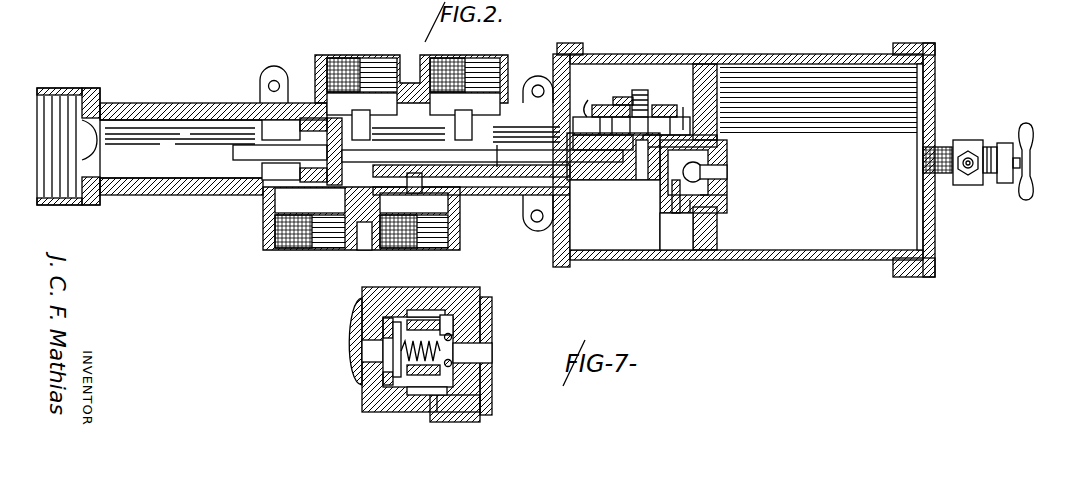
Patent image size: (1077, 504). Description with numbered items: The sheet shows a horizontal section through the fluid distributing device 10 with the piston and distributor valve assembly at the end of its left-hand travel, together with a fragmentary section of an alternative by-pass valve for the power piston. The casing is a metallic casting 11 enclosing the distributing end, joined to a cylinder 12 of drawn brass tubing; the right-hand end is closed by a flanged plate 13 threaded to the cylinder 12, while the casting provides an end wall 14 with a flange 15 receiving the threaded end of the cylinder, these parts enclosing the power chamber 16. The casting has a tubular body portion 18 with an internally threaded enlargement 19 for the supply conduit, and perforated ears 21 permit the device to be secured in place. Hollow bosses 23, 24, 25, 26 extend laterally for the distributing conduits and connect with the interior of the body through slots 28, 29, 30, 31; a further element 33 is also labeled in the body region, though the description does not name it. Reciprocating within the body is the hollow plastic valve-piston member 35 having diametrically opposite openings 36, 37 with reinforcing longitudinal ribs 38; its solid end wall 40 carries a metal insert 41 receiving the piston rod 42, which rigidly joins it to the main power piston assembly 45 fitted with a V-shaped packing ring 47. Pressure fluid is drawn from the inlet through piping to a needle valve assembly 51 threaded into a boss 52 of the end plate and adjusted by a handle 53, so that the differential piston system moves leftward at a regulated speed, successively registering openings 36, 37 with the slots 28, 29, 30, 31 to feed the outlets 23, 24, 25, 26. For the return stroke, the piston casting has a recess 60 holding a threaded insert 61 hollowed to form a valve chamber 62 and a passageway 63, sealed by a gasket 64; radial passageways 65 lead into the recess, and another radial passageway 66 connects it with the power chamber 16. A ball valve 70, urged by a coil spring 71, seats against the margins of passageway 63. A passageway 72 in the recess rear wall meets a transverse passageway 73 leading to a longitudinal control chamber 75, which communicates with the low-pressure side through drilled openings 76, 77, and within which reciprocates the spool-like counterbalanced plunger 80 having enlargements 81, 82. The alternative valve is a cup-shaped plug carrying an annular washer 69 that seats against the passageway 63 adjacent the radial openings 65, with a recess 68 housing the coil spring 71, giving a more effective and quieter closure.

In FIG. 2, the distributing device 10 is at (630, 262).
In FIG. 2, the casting 11 is at (197, 204).
In FIG. 2, the cylinder 12 is at (813, 54).
In FIG. 2, the flanged plate 13 is at (930, 78).
In FIG. 2, the end wall 14 is at (556, 43).
In FIG. 2, the flange 15 is at (582, 44).
In FIG. 2, the power chamber 16 is at (848, 235).
In FIG. 2, the tubular body portion 18 is at (176, 103).
In FIG. 2, the internally threaded enlargement 19 is at (62, 100).
In FIG. 2, the perforated ears 21 is at (537, 76).
In FIG. 2, the hollow boss 23 is at (452, 62).
In FIG. 2, the hollow boss 24 is at (395, 248).
In FIG. 2, the hollow boss 25 is at (357, 58).
In FIG. 2, the hollow boss 26 is at (288, 248).
In FIG. 2, the slot 28 is at (465, 116).
In FIG. 2, the slot 29 is at (414, 193).
In FIG. 2, the slot 30 is at (377, 77).
In FIG. 2, the slot 31 is at (329, 166).
In FIG. 2, the passage 33 is at (526, 131).
In FIG. 2, the distributing valve and piston member 35 is at (156, 196).
In FIG. 2, the rectangular opening 36 is at (262, 128).
In FIG. 2, the rectangular opening 37 is at (238, 196).
In FIG. 2, the longitudinal ribs 38 is at (240, 150).
In FIG. 2, the solid end wall 40 is at (310, 201).
In FIG. 2, the metal insert 41 is at (362, 116).
In FIG. 2, the piston rod 42 is at (392, 150).
In FIG. 2, the main power piston assembly 45 is at (705, 64).
In FIG. 2, the V-shaped packing ring 47 is at (740, 56).
In FIG. 2, the needle valve assembly 51 is at (972, 141).
In FIG. 2, the boss 52 is at (938, 146).
In FIG. 2, the handle 53 is at (1030, 198).
In FIG. 2, the recess 60 is at (725, 140).
In FIG. 7, the recess 60 is at (372, 312).
In FIG. 2, the insert 61 is at (712, 150).
In FIG. 7, the insert 61 is at (488, 308).
In FIG. 2, the valve chamber 62 is at (631, 215).
In FIG. 7, the valve chamber 62 is at (388, 327).
In FIG. 2, the passageway 63 is at (705, 172).
In FIG. 7, the passageway 63 is at (492, 362).
In FIG. 2, the gasket 64 is at (668, 205).
In FIG. 7, the gasket 64 is at (388, 320).
In FIG. 2, the radial passageways 65 is at (727, 192).
In FIG. 7, the radial passageways 65 is at (448, 315).
In FIG. 2, the radial passageway 66 is at (682, 215).
In FIG. 7, the radial passageway 66 is at (432, 412).
In FIG. 7, the recess 68 is at (426, 320).
In FIG. 7, the annular washer 69 is at (488, 327).
In FIG. 2, the ball valve 70 is at (750, 160).
In FIG. 7, the ball valve 70 is at (492, 350).
In FIG. 2, the coil spring 71 is at (718, 120).
In FIG. 7, the coil spring 71 is at (345, 378).
In FIG. 2, the passageway 72 is at (606, 217).
In FIG. 7, the passageway 72 is at (370, 352).
In FIG. 2, the transverse passageway 73 is at (625, 182).
In FIG. 7, the transverse passageway 73 is at (350, 333).
In FIG. 2, the fluid control chamber 75 is at (681, 110).
In FIG. 2, the drilled opening 76 is at (722, 112).
In FIG. 2, the drilled opening 77 is at (631, 106).
In FIG. 2, the piston valve 80 is at (589, 71).
In FIG. 2, the enlargement 81 is at (596, 100).
In FIG. 2, the enlargement 82 is at (650, 95).